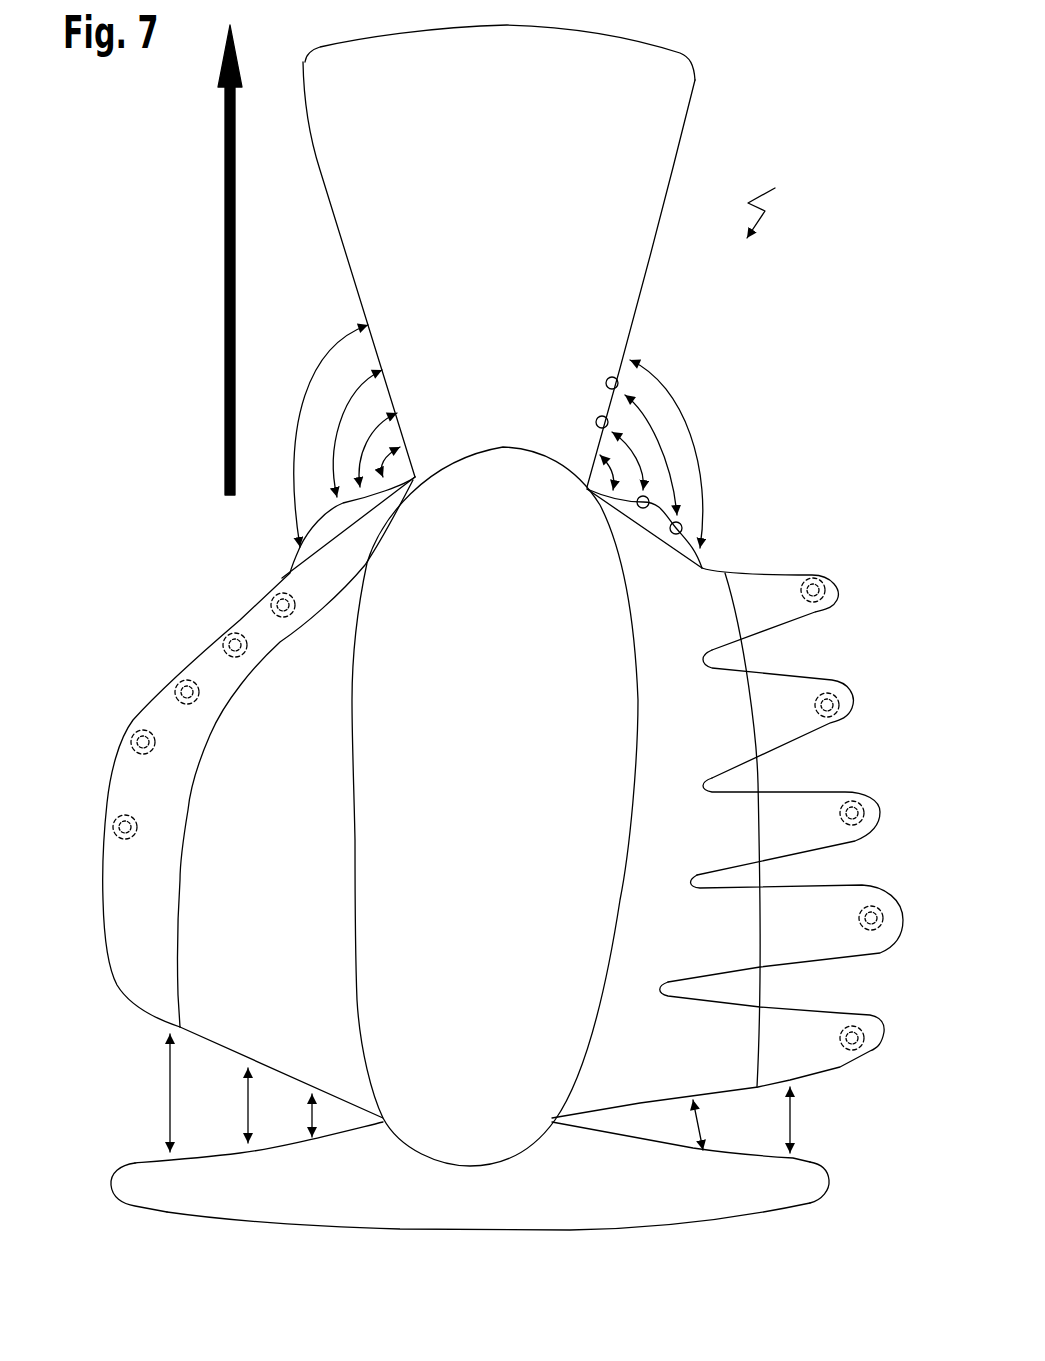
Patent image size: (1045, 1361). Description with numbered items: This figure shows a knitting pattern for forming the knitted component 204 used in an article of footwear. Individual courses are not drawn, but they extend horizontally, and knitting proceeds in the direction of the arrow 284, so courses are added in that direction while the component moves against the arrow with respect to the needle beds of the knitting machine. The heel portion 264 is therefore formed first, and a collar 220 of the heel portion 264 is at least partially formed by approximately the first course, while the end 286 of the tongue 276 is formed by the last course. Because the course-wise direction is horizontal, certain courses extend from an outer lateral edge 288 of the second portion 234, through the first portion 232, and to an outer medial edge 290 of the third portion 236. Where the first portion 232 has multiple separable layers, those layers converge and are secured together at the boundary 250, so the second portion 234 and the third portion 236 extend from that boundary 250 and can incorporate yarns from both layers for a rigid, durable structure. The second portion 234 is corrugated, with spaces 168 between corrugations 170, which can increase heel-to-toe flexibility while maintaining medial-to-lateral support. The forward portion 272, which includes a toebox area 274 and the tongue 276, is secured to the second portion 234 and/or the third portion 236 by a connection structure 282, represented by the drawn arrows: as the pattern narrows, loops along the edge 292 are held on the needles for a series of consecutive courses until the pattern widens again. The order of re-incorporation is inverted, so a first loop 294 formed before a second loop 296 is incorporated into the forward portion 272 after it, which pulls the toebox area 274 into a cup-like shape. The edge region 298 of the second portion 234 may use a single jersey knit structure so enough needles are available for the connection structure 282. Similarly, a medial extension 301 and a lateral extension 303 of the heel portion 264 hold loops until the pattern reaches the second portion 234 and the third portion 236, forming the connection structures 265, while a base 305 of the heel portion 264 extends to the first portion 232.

The end of the tongue 286 is at (500, 40).
The tongue 276 is at (335, 269).
The forward portion 272 is at (665, 283).
The knitted component 204 is at (773, 201).
The arrow 284 is at (202, 260).
The toebox area 274 is at (393, 423).
The first loop 294 is at (684, 435).
The second loop 296 is at (675, 439).
The connection structure 282 is at (684, 454).
The edge 292 is at (683, 528).
The second portion 234 is at (785, 595).
The edge region 298 is at (694, 577).
The boundary 250 is at (266, 753).
The third portion 236 is at (185, 716).
The outer medial edge 290 is at (230, 752).
The first portion 232 is at (495, 806).
The spaces 168 is at (793, 714).
The outer lateral edge 288 is at (804, 818).
The corrugations 170 is at (741, 973).
The connection structures 265 is at (490, 1093).
The medial extension 301 is at (136, 1204).
The base 305 is at (283, 1199).
The collar 220 is at (488, 1240).
The heel portion 264 is at (681, 1195).
The lateral extension 303 is at (839, 1196).